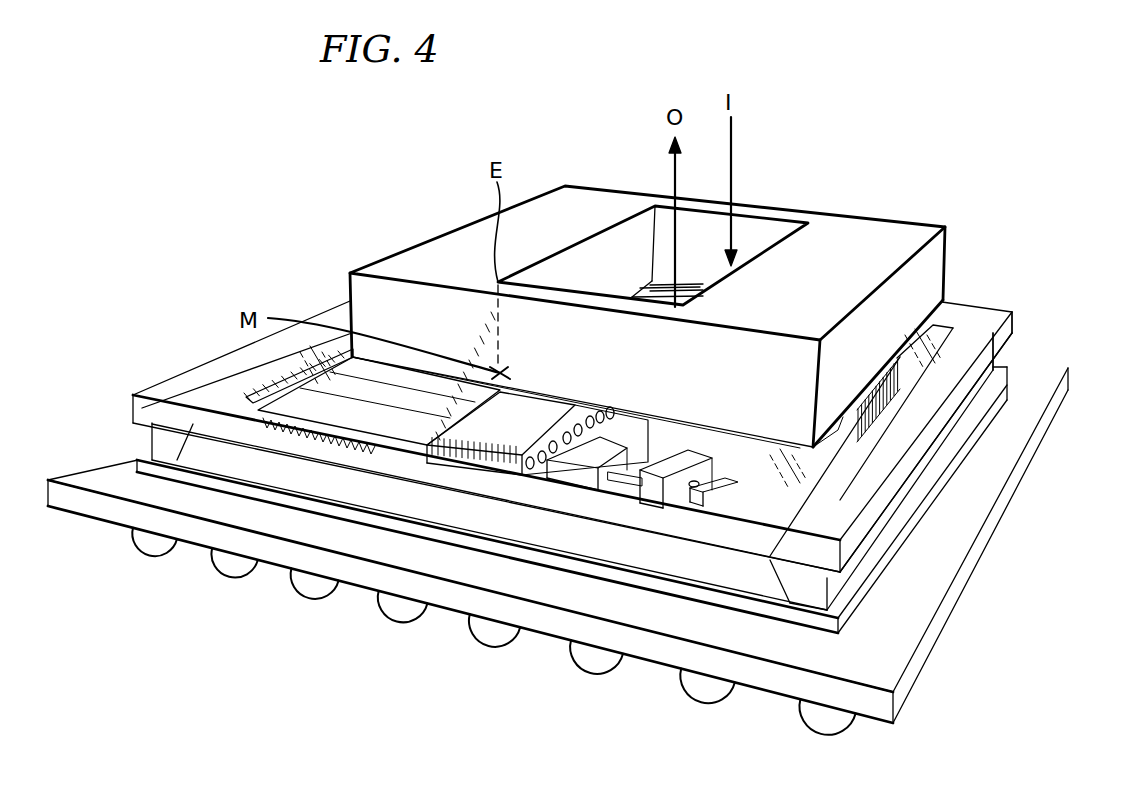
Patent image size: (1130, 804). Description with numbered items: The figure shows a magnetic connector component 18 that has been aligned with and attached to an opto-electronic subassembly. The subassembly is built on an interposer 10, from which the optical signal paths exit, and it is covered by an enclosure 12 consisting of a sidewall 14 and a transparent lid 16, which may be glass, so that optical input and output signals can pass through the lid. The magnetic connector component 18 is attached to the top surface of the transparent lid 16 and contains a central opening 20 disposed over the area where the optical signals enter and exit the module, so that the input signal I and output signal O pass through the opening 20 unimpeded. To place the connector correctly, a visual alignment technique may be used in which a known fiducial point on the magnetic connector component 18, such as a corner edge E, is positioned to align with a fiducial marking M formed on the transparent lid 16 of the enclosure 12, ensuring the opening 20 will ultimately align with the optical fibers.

The interposer 10 is at (992, 380).
The enclosure 12 is at (1028, 296).
The sidewall 14 is at (165, 443).
The transparent lid 16 is at (131, 410).
The magnetic connector component 18 is at (350, 284).
The central opening 20 is at (604, 250).